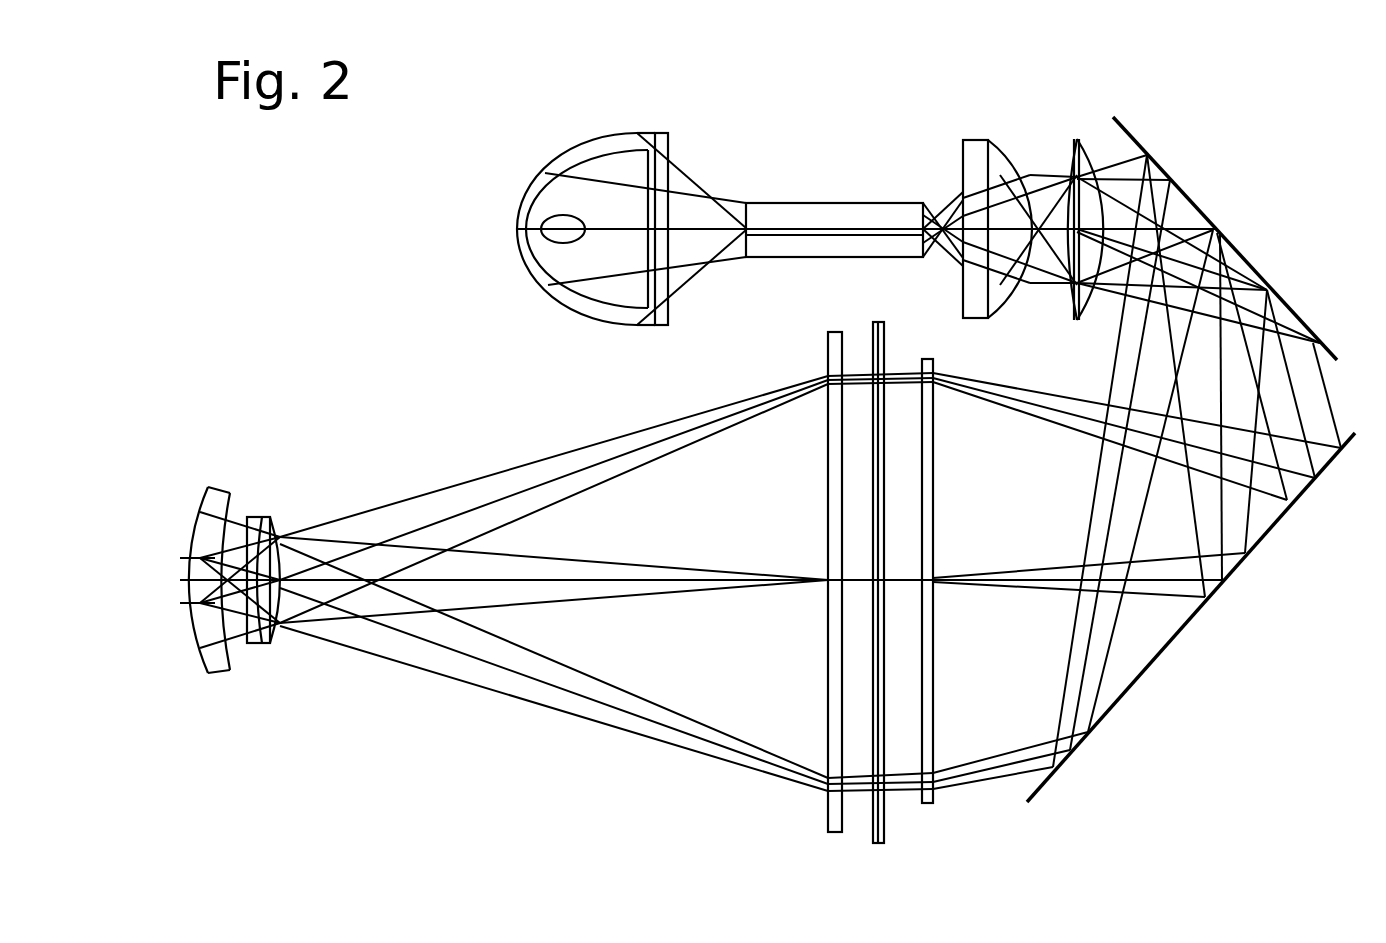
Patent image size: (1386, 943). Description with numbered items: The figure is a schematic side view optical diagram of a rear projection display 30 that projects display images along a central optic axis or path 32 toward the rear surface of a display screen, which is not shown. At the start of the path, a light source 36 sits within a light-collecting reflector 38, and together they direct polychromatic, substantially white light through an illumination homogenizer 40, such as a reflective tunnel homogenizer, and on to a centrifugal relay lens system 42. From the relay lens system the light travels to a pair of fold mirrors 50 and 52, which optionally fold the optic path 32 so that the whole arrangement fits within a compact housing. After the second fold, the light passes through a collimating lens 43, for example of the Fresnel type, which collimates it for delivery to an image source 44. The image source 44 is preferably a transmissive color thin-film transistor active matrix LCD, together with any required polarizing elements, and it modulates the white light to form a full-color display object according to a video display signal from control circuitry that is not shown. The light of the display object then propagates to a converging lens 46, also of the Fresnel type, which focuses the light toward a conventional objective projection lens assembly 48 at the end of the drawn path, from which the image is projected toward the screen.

The rear projection display 30 is at (456, 367).
The central optic axis or path 32 is at (713, 232).
The light source 36 is at (563, 213).
The light-collecting reflector 38 is at (607, 323).
The illumination homogenizer 40 is at (833, 212).
The centrifugal relay lens system 42 is at (1105, 130).
The collimating lens 43 is at (935, 662).
The image source 44 is at (886, 828).
The converging lens 46 is at (826, 662).
The objective projection lens assembly 48 is at (308, 690).
The fold mirror 50 is at (1242, 250).
The fold mirror 52 is at (1178, 635).